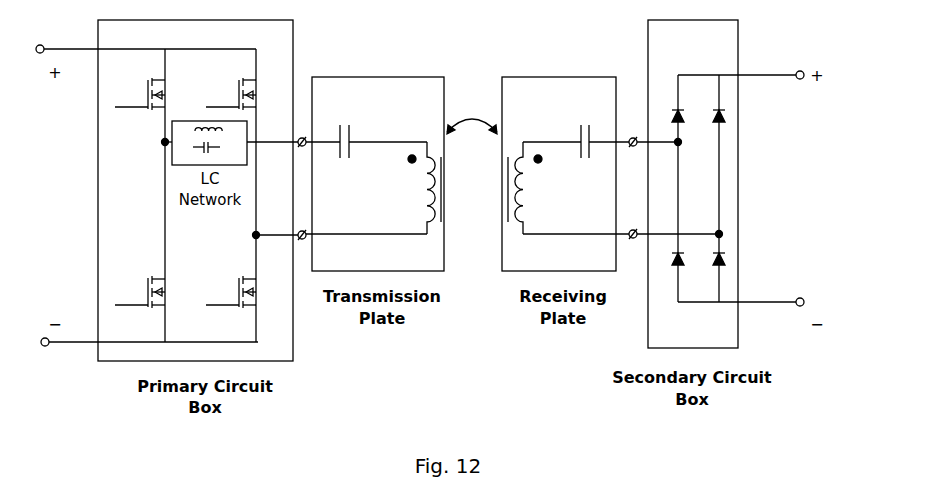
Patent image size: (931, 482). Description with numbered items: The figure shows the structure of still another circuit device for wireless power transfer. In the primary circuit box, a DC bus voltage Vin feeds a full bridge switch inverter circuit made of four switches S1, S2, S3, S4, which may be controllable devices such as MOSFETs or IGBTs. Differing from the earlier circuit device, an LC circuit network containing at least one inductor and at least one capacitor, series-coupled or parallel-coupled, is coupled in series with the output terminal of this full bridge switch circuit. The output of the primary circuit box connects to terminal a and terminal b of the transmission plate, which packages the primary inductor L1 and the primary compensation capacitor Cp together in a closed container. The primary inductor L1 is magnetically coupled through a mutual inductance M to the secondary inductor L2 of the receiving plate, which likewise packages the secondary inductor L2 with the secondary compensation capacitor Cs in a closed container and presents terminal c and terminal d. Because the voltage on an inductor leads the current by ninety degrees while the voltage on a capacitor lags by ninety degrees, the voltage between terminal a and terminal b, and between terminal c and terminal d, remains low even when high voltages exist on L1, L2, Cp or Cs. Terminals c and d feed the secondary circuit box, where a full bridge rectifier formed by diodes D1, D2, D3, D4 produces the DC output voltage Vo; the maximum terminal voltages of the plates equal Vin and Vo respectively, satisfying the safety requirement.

The switch S1 is at (153, 86).
The switch S2 is at (244, 86).
The switch S3 is at (153, 289).
The switch S4 is at (244, 289).
The primary compensation capacitor Cp is at (383, 126).
The primary inductor L1 is at (419, 188).
The secondary inductor L2 is at (530, 188).
The secondary compensation capacitor Cs is at (576, 128).
The mutual inductance M is at (472, 116).
The terminal a is at (293, 134).
The terminal b is at (340, 226).
The terminal c is at (654, 134).
The terminal d is at (623, 226).
The diode D1 is at (667, 106).
The diode D2 is at (732, 106).
The diode D3 is at (667, 275).
The diode D4 is at (732, 275).
The DC bus voltage Vin is at (61, 188).
The DC output voltage Vo is at (821, 188).